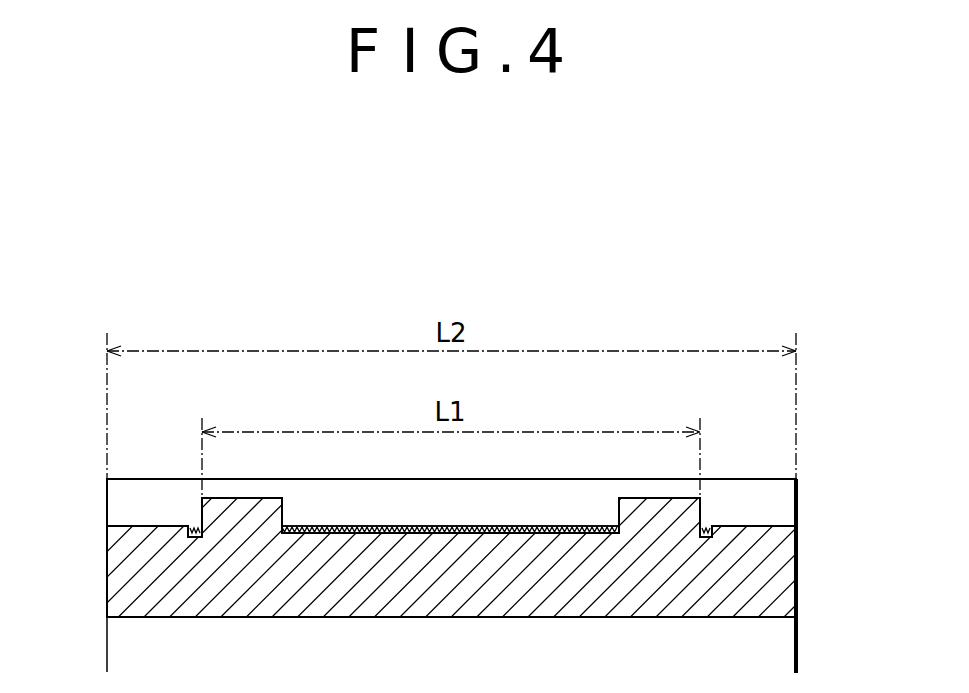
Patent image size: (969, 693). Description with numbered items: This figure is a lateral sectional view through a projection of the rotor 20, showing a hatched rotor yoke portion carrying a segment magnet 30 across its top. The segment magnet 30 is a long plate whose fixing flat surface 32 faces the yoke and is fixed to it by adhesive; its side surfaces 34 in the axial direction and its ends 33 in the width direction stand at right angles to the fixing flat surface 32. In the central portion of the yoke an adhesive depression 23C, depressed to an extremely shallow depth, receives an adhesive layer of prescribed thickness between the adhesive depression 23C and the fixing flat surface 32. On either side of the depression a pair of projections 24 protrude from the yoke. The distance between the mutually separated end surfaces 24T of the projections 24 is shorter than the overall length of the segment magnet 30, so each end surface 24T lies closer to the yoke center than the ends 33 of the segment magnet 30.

The rotor 20 is at (798, 565).
The segment magnet 30 is at (799, 487).
The end of the segment magnet 33 is at (107, 500).
The projection 24 is at (242, 503).
The end surface of the projection 24T is at (202, 517).
The fixing flat surface 32 is at (522, 537).
The side surface of the segment magnet 34 is at (438, 502).
The adhesive depression 23C is at (347, 527).